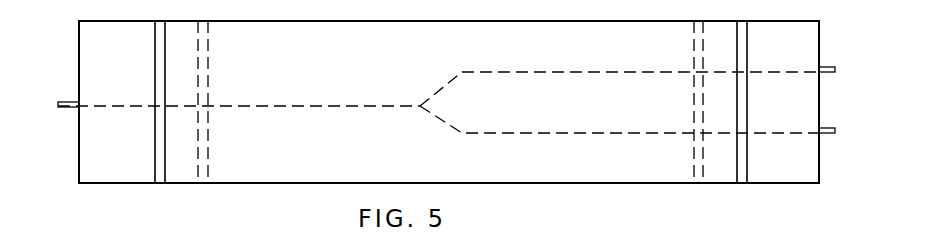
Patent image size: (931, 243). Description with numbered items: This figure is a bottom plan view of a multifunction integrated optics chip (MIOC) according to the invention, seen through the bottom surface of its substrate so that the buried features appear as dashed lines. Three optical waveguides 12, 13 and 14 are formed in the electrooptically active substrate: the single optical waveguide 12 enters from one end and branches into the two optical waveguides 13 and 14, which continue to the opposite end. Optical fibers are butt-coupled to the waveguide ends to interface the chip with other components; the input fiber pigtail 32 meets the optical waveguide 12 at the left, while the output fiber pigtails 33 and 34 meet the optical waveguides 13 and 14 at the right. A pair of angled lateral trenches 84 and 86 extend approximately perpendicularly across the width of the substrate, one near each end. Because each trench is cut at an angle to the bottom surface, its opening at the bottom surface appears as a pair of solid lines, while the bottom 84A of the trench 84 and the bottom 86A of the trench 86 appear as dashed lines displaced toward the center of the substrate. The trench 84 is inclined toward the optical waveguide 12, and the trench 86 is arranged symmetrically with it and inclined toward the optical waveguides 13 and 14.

The optical waveguide 12 is at (263, 107).
The optical waveguide 13 is at (532, 73).
The optical waveguide 14 is at (483, 134).
The input fiber pigtail 32 is at (61, 101).
The output fiber pigtail 33 is at (825, 67).
The output fiber pigtail 34 is at (827, 135).
The angled lateral trench 84 is at (155, 172).
The bottom of the trench 84A is at (198, 172).
The angled lateral trench 86 is at (738, 162).
The bottom of the trench 86A is at (700, 167).